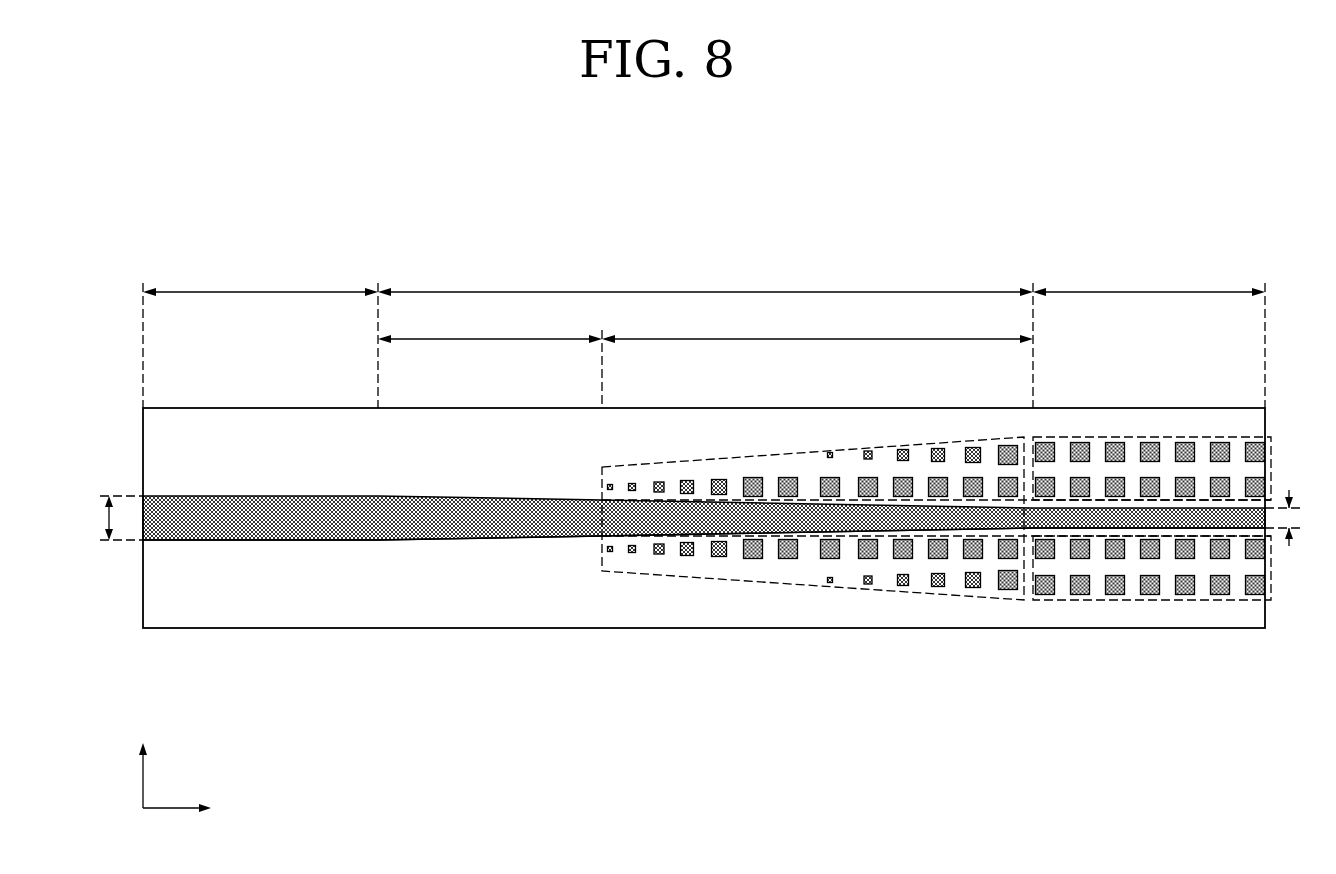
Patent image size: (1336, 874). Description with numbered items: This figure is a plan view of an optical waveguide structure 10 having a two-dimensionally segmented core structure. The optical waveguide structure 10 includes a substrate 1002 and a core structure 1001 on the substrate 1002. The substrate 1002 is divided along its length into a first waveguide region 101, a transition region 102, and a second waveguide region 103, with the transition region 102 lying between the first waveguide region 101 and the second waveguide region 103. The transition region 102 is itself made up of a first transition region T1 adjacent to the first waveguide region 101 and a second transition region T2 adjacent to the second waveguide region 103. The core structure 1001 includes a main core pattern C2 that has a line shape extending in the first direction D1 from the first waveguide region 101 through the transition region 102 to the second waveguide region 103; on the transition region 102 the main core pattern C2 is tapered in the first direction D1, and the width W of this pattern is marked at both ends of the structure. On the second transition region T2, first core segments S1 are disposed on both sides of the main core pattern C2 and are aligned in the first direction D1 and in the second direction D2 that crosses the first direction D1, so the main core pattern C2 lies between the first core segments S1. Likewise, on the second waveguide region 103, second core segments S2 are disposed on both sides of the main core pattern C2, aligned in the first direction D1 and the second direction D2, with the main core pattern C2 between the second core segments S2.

The optical waveguide structure 10 is at (1253, 228).
The first waveguide region 101 is at (260, 335).
The transition region 102 is at (705, 335).
The second waveguide region 103 is at (1149, 335).
The core structure 1001 is at (316, 548).
The substrate 1002 is at (415, 614).
The main core pattern C2 is at (218, 529).
The first core segments S1 is at (884, 443).
The second core segments S2 is at (1130, 437).
The first transition region T1 is at (490, 358).
The second transition region T2 is at (817, 325).
The core width W is at (701, 518).
The first direction D1 is at (193, 808).
The second direction D2 is at (142, 758).